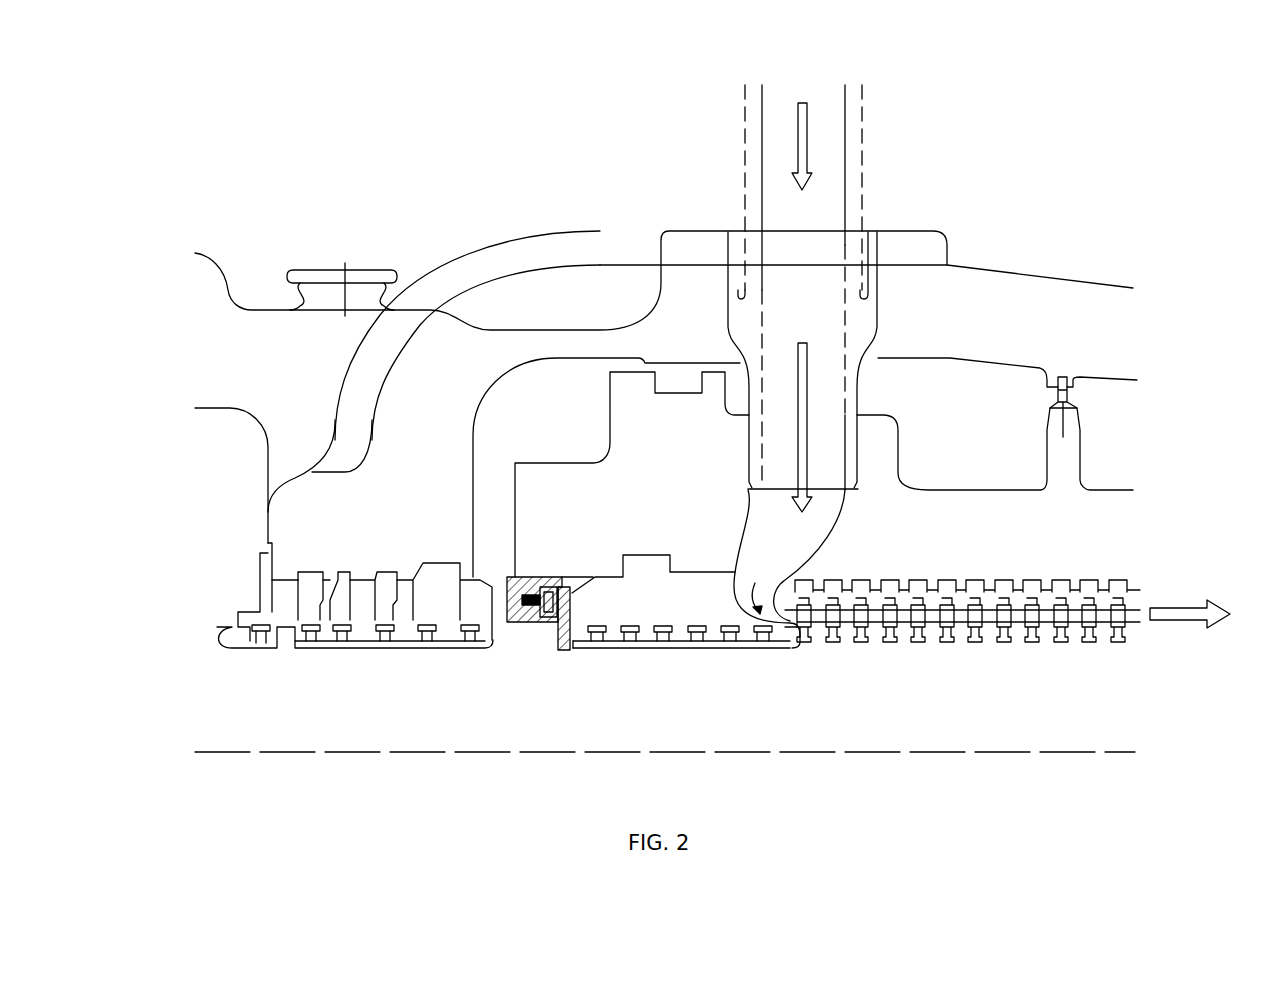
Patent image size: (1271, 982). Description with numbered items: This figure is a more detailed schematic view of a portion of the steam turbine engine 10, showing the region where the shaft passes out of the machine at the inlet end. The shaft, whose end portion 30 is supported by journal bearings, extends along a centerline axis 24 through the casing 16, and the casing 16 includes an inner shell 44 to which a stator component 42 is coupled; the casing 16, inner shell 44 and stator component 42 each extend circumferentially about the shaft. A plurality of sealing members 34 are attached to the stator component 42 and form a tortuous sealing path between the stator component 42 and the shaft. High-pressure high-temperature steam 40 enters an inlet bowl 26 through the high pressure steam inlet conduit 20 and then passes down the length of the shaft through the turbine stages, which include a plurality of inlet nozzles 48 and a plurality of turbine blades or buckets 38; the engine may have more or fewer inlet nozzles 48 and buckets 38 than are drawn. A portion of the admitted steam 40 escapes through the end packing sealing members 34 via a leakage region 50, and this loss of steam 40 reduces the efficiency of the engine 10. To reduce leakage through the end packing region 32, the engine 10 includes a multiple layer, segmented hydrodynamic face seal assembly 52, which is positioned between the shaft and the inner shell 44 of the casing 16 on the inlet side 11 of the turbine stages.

The steam turbine engine 10 is at (1090, 145).
The inlet side 11 is at (748, 646).
The casing 16 is at (1047, 275).
The high pressure steam inlet conduit 20 is at (866, 230).
The centerline axis 24 is at (789, 754).
The inlet bowl 26 is at (796, 536).
The shaft end portion 30 is at (217, 627).
The end packing region 32 is at (367, 655).
The sealing members 34 is at (690, 655).
The turbine blades or buckets 38 is at (818, 645).
The steam 40 is at (810, 102).
The stator component 42 is at (668, 610).
The inner shell 44 is at (668, 503).
The inlet nozzles 48 is at (833, 603).
The leakage region 50 is at (577, 645).
The multiple layer, segmented hydrodynamic face seal assembly 52 is at (545, 621).